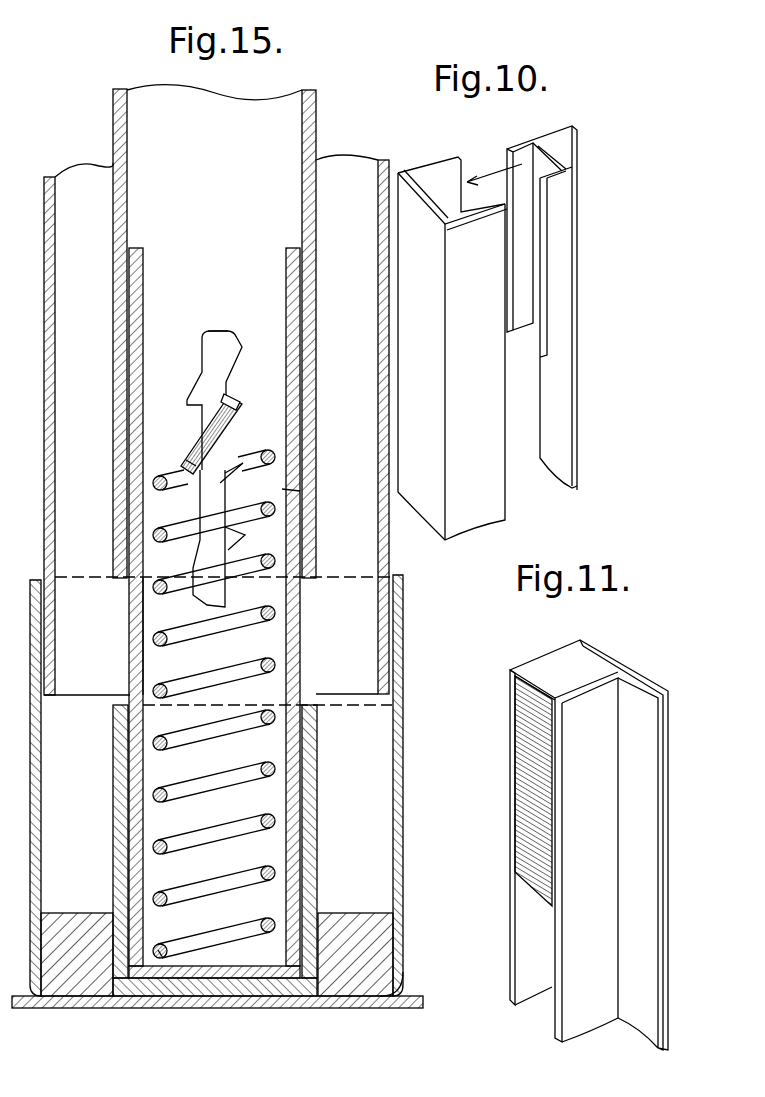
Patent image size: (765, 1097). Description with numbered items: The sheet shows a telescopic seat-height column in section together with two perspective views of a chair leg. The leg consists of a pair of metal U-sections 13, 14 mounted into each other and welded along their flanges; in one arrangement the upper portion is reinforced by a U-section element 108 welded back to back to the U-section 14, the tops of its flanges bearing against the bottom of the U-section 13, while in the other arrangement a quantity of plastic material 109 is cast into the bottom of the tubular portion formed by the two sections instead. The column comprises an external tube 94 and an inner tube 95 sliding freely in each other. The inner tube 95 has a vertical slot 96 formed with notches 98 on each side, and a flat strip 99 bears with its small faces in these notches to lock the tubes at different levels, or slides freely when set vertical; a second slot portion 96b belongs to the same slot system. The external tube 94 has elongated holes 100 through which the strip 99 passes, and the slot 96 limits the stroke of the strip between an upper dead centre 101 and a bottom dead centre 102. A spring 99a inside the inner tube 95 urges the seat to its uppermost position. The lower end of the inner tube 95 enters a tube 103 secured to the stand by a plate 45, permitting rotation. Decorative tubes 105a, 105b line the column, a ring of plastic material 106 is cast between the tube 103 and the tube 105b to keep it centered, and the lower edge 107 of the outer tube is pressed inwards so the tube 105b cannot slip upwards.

In FIG. 10, the metal U-section 13 is at (435, 157).
In FIG. 11, the metal U-section 13 is at (594, 652).
In FIG. 10, the metal U-section 14 is at (600, 186).
In FIG. 11, the metal U-section 14 is at (652, 692).
In FIG. 15, the plate 45 is at (268, 1004).
In FIG. 15, the external tube 94 is at (302, 195).
In FIG. 15, the inner tube 95 is at (288, 270).
In FIG. 15, the vertical slot 96 is at (200, 346).
In FIG. 15, the plunger slot 96b is at (198, 463).
In FIG. 15, the notches 98 is at (218, 382).
In FIG. 15, the flat strip 99 is at (236, 419).
In FIG. 15, the spring 99a is at (112, 733).
In FIG. 15, the elongated holes 100 is at (300, 491).
In FIG. 15, the upper dead centre 101 is at (223, 329).
In FIG. 15, the bottom dead centre 102 is at (131, 609).
In FIG. 15, the tube 103 is at (318, 728).
In FIG. 15, the decorative tube 105a is at (380, 320).
In FIG. 15, the decorative tube 105b is at (402, 772).
In FIG. 15, the ring of plastic material 106 is at (348, 913).
In FIG. 15, the lower edge 107 is at (403, 990).
In FIG. 10, the U-section element 108 is at (513, 252).
In FIG. 11, the plastic material 109 is at (527, 802).